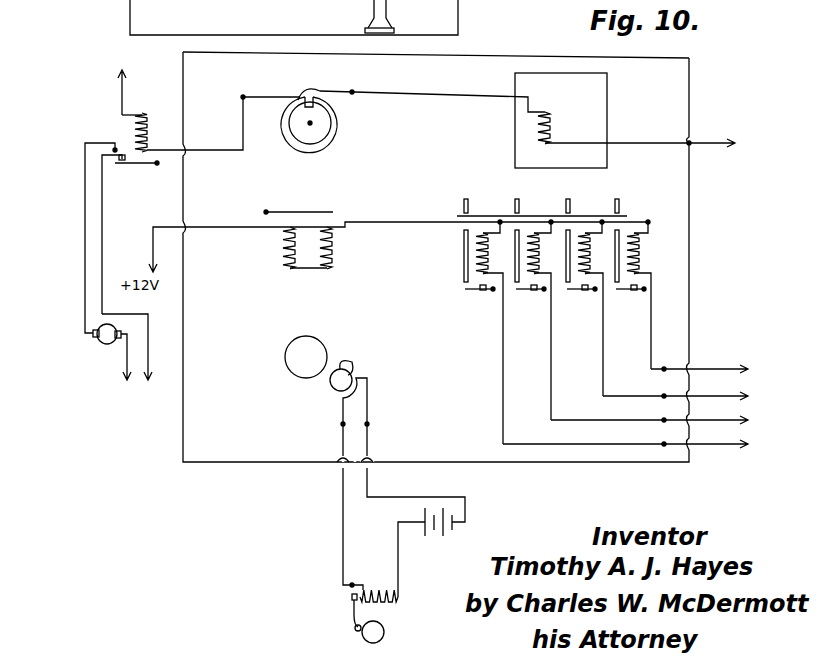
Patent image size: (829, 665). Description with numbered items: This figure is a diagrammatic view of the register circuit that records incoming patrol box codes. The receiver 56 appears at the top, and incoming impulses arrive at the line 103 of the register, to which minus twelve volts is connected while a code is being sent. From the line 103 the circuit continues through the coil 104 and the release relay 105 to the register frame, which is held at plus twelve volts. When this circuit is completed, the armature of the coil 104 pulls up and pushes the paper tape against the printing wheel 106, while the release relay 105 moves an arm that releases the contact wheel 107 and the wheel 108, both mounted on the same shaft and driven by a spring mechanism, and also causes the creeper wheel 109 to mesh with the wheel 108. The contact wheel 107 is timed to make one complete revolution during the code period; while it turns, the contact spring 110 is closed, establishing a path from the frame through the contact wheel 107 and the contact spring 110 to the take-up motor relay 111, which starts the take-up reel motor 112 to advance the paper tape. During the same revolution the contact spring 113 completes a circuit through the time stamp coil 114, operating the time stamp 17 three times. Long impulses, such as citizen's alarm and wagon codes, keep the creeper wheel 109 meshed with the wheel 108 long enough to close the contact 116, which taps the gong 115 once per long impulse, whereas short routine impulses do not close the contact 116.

The receiver 56 is at (388, 12).
The time stamp 17 is at (600, 113).
The line 103 is at (718, 447).
The coil 104 is at (465, 290).
The release relay 105 is at (310, 268).
The printing wheel 106 is at (466, 199).
The contact wheel 107 is at (333, 128).
The wheel 108 is at (306, 343).
The creeper wheel 109 is at (348, 365).
The contact spring 110 is at (268, 97).
The take-up motor relay 111 is at (135, 131).
The take-up reel motor 112 is at (105, 345).
The contact spring 113 is at (320, 89).
The time stamp coil 114 is at (555, 118).
The gong 115 is at (384, 632).
The contact 116 is at (370, 373).